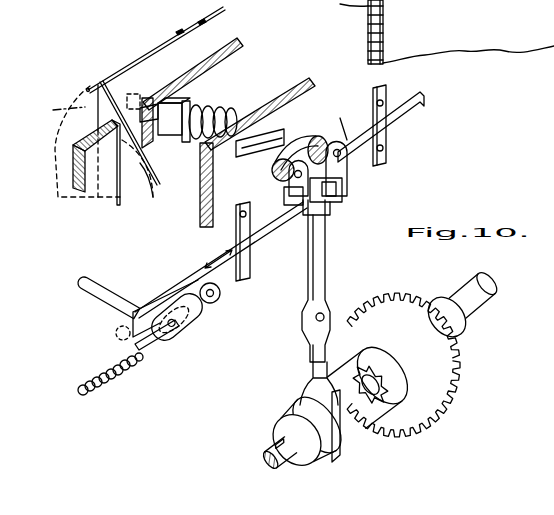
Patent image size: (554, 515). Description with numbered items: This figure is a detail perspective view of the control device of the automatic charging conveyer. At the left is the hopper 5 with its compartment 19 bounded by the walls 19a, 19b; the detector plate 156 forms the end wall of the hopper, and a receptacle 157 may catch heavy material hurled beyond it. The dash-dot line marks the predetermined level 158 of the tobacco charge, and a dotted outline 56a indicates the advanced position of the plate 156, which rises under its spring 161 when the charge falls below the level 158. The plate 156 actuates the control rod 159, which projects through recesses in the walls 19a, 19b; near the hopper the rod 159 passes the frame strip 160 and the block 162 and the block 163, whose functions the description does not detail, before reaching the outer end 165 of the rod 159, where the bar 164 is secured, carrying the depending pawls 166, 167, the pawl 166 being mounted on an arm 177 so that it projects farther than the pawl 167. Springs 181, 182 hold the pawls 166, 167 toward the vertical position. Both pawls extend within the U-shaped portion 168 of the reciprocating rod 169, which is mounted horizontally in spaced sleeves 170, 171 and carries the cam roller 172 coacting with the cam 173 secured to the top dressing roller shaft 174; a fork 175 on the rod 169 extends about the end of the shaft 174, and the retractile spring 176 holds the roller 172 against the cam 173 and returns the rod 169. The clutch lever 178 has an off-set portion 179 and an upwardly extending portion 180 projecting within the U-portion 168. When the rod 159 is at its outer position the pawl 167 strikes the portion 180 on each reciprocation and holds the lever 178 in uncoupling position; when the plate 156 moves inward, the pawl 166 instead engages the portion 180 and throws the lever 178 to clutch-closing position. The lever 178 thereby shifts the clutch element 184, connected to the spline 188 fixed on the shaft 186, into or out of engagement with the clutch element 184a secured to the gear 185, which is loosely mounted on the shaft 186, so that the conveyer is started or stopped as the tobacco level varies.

The hopper 5 is at (82, 80).
The compartment 19 is at (182, 172).
The wall of compartment 19a is at (306, 80).
The wall of compartment 19b is at (240, 43).
The housing outline 56a is at (104, 155).
The detector plate 156 is at (113, 175).
The receptacle 157 is at (143, 58).
The predetermined level 158 is at (60, 108).
The control rod 159 is at (237, 126).
The frame strip 160 is at (159, 130).
The spring 161 is at (215, 112).
The block 162 is at (140, 98).
The block 163 is at (186, 106).
The bar 164 is at (340, 118).
The outer end of control rod 165 is at (322, 138).
The pawl 166 is at (348, 166).
The pawl 167 is at (272, 180).
The U-shaped portion 168 is at (307, 222).
The reciprocating rod 169 is at (213, 262).
The sleeve 170 is at (388, 128).
The sleeve 171 is at (252, 262).
The cam roller 172 is at (210, 304).
The cam 173 is at (180, 303).
The top dressing roller shaft 174 is at (122, 292).
The fork 175 is at (157, 348).
The retractile spring 176 is at (110, 387).
The arm 177 is at (337, 140).
The clutch lever 178 is at (306, 372).
The off-set portion 179 is at (332, 206).
The upwardly extending portion 180 is at (337, 190).
The spring 181 is at (345, 147).
The spring 182 is at (290, 140).
The clutch element 184 is at (312, 400).
The clutch element 184a is at (397, 383).
The gear 185 is at (462, 362).
The shaft 186 is at (478, 302).
The spline 188 is at (363, 400).